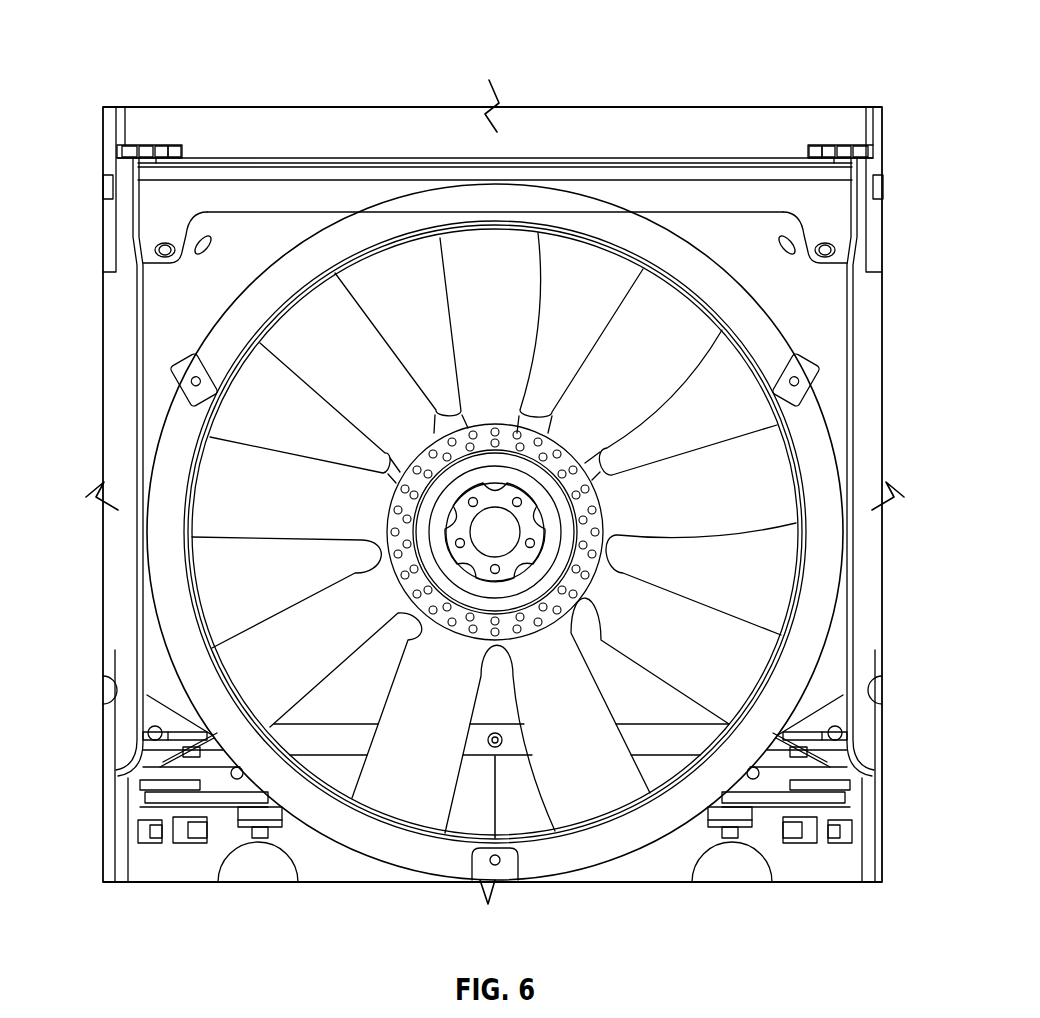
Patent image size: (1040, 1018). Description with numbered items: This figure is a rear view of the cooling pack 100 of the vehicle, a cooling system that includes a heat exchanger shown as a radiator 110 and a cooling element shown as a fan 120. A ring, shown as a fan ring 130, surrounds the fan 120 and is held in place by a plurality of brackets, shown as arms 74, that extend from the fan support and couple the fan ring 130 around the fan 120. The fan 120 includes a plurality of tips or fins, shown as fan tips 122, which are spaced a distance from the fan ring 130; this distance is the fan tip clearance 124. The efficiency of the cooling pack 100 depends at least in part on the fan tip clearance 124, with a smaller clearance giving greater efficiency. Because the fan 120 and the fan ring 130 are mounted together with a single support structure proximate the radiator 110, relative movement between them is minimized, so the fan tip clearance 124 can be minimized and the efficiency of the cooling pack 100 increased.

The cooling pack 100 is at (132, 50).
The radiator 110 is at (162, 298).
The fan 120 is at (495, 532).
The fan tips 122 is at (242, 500).
The fan tip clearance 124 is at (343, 274).
The fan ring 130 is at (757, 330).
The arms 74 is at (186, 370).